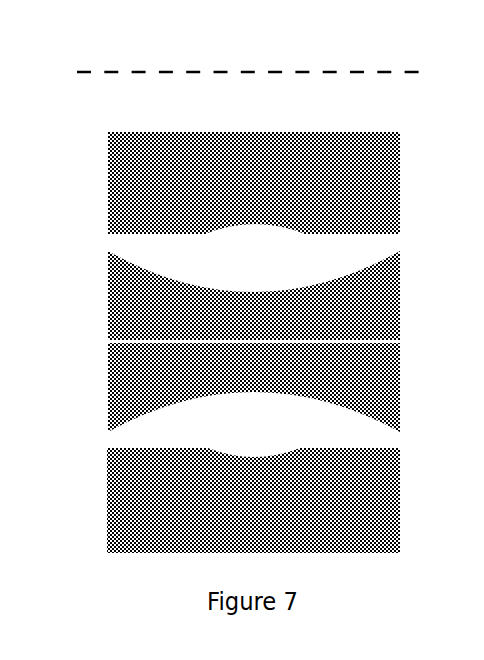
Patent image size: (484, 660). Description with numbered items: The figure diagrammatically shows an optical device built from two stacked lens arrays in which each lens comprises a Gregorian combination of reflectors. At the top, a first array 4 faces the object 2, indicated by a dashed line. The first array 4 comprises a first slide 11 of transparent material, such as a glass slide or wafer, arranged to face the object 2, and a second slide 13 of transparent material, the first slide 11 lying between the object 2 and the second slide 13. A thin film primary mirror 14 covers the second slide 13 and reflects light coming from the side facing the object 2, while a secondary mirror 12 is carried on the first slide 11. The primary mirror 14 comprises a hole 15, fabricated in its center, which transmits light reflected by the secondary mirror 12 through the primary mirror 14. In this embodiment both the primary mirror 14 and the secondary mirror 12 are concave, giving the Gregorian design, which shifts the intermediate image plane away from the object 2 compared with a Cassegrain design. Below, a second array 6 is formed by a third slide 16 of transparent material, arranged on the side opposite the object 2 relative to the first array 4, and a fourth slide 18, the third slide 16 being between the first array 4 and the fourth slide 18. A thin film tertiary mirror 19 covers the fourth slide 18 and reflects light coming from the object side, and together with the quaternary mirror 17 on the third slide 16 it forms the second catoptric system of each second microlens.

The object 2 is at (192, 70).
The first array 4 is at (204, 235).
The second array 6 is at (206, 448).
The first slide 11 is at (127, 147).
The secondary mirror 12 is at (236, 225).
The second slide 13 is at (138, 290).
The primary mirror 14 is at (190, 286).
The hole 15 is at (252, 292).
The third slide 16 is at (138, 403).
The quaternary mirror 17 is at (180, 401).
The fourth slide 18 is at (147, 536).
The tertiary mirror 19 is at (225, 453).